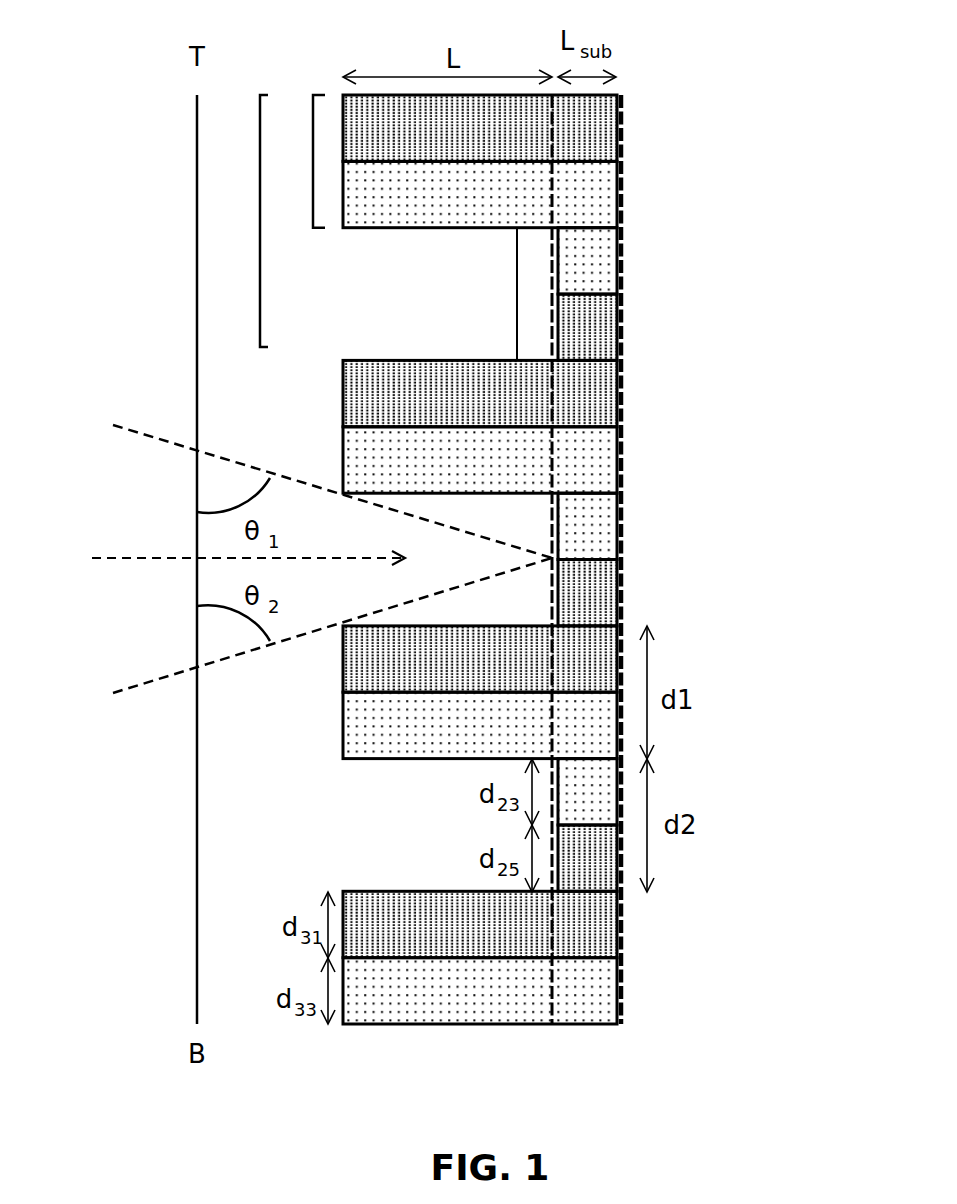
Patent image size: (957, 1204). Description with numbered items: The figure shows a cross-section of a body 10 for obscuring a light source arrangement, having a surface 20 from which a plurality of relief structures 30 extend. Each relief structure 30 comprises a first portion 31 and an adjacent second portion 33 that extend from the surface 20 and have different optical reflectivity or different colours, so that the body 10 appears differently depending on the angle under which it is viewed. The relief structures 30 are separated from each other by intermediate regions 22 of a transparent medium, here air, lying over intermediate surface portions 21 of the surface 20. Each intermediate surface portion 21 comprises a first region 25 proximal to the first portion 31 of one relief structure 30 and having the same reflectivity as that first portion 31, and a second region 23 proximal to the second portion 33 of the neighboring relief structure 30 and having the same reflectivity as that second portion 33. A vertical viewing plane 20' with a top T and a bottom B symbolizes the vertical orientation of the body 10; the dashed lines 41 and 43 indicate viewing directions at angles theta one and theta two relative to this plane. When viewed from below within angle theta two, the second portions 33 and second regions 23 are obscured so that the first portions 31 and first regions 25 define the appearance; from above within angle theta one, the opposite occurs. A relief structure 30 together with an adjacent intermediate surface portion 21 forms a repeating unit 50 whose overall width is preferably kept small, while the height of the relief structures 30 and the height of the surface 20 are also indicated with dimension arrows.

The body 10 is at (477, 1124).
The surface 20 is at (711, 559).
The vertical viewing plane 20' is at (109, 559).
The intermediate surface portion 21 is at (517, 295).
The intermediate region 22 is at (403, 290).
The second region 23 is at (605, 271).
The first region 25 is at (605, 341).
The relief structure 30 is at (313, 162).
The first portion 31 is at (605, 131).
The second portion 33 is at (605, 208).
The first diffracted beam 41 is at (314, 481).
The second diffracted beam 43 is at (313, 637).
The repeating unit 50 is at (260, 222).